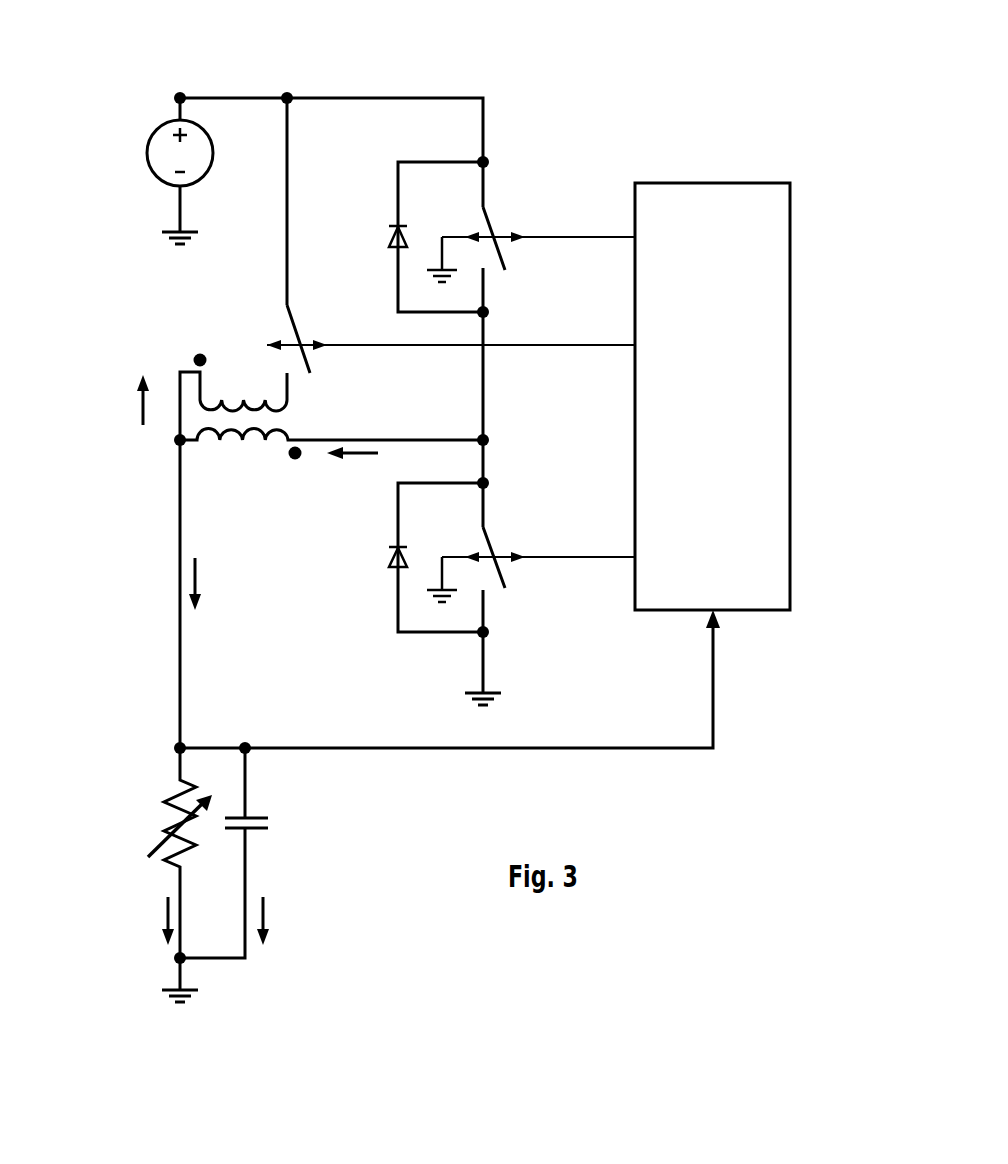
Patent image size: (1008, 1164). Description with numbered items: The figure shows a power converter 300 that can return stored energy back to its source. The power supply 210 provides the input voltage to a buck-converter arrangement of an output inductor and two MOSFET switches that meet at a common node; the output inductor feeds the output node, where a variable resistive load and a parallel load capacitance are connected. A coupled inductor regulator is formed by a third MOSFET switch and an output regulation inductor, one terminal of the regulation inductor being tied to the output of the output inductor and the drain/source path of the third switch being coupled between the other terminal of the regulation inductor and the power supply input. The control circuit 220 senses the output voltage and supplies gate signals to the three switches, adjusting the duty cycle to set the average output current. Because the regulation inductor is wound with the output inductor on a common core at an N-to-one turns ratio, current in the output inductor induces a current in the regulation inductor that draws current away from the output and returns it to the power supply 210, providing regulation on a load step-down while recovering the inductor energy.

The power supply 210 is at (147, 142).
The control circuit 220 is at (790, 522).
The power converter 300 is at (621, 84).